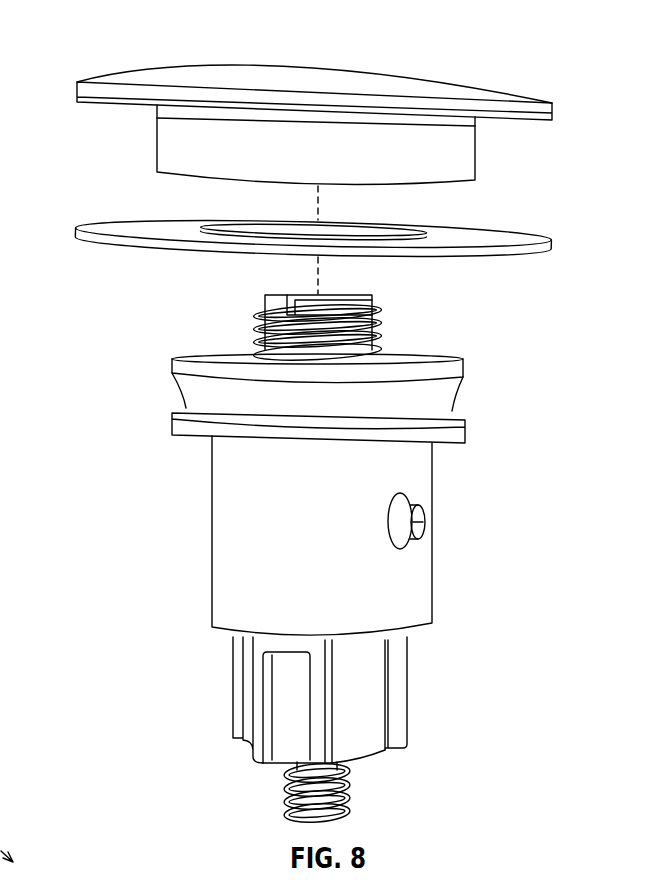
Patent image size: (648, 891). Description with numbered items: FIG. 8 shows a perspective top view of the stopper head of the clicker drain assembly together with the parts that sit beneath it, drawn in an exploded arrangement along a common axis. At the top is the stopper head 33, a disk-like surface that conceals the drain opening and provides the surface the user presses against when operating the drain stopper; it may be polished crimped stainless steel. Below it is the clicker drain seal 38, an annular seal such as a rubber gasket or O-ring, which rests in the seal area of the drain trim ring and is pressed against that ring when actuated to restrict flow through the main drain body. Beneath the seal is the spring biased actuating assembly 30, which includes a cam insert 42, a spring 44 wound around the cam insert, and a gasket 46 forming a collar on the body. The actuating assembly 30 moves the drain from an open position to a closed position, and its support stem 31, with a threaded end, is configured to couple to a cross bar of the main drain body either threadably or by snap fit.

The stopper head 33 is at (225, 68).
The clicker drain seal 38 is at (75, 232).
The cam insert 42 is at (290, 300).
The spring 44 is at (383, 345).
The gasket 46 is at (172, 390).
The actuating assembly 30 is at (425, 522).
The support stem 31 is at (352, 795).